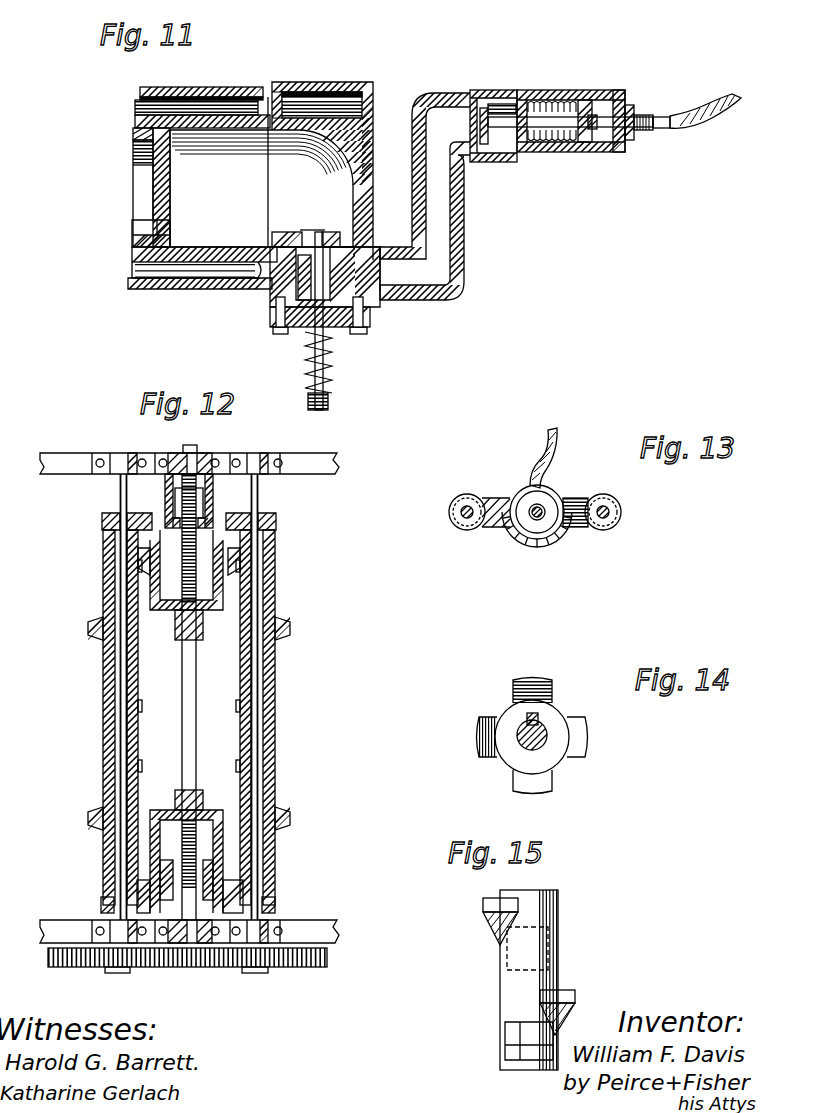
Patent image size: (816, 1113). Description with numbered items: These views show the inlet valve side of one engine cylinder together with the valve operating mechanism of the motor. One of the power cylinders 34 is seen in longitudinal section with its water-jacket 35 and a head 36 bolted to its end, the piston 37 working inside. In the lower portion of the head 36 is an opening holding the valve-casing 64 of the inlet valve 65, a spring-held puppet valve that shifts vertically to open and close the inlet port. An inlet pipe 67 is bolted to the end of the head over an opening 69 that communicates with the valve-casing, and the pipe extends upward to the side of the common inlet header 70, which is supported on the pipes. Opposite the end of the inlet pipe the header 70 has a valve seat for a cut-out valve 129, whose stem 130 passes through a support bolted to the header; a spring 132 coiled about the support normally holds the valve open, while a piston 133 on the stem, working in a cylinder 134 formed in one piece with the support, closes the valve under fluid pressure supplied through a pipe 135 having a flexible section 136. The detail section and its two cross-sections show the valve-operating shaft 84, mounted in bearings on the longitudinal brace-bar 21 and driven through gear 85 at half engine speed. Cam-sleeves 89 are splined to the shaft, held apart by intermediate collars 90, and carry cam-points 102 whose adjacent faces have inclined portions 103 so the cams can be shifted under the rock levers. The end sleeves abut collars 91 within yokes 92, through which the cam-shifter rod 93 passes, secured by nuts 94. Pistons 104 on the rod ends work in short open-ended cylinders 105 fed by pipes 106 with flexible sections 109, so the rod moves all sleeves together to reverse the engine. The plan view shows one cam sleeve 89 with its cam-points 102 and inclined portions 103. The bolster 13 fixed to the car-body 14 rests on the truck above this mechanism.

In FIG. 11, the water-jacket 35 is at (232, 80).
In FIG. 11, the cylinder head 36 is at (342, 84).
In FIG. 11, the power cylinder 34 is at (261, 188).
In FIG. 11, the piston 37 is at (172, 207).
In FIG. 11, the inlet valve 65 is at (314, 232).
In FIG. 11, the valve-casing 64 is at (345, 328).
In FIG. 11, the opening 69 is at (362, 242).
In FIG. 11, the inlet pipe 67 is at (465, 224).
In FIG. 11, the inlet header 70 is at (494, 90).
In FIG. 11, the cut-out valve 129 is at (527, 96).
In FIG. 11, the valve stem 130 is at (545, 150).
In FIG. 11, the spring 132 is at (586, 150).
In FIG. 11, the cylinder 134 is at (620, 94).
In FIG. 11, the piston 133 is at (646, 104).
In FIG. 11, the pipe 135 is at (662, 130).
In FIG. 11, the flexible section 136 is at (712, 120).
In FIG. 12, the brace-bar 21 is at (312, 456).
In FIG. 12, the gear 85 is at (158, 967).
In FIG. 12, the cylinder 105 is at (218, 495).
In FIG. 13, the cylinder 105 is at (518, 495).
In FIG. 12, the piston 104 is at (186, 868).
In FIG. 13, the piston 104 is at (542, 500).
In FIG. 12, the cam-sleeve 89 is at (103, 598).
In FIG. 14, the cam-sleeve 89 is at (552, 755).
In FIG. 15, the cam-sleeve 89 is at (558, 922).
In FIG. 12, the collar 91 is at (107, 520).
In FIG. 13, the collar 91 is at (466, 530).
In FIG. 12, the collar 90 is at (103, 660).
In FIG. 12, the cam-point 102 is at (230, 568).
In FIG. 14, the cam-point 102 is at (515, 685).
In FIG. 15, the cam-point 102 is at (490, 912).
In FIG. 12, the yoke 92 is at (218, 610).
In FIG. 13, the yoke 92 is at (565, 540).
In FIG. 12, the cam-shifter rod 93 is at (184, 693).
In FIG. 13, the cam-shifter rod 93 is at (540, 510).
In FIG. 12, the nut 94 is at (177, 615).
In FIG. 12, the valve-operating shaft 84 is at (118, 818).
In FIG. 13, the valve-operating shaft 84 is at (643, 547).
In FIG. 14, the valve-operating shaft 84 is at (540, 730).
In FIG. 12, the bolster 13 is at (103, 529).
In FIG. 12, the car-body 14 is at (240, 743).
In FIG. 13, the pipe 106 is at (537, 498).
In FIG. 13, the flexible section 109 is at (550, 440).
In FIG. 14, the inclined portion 103 is at (545, 682).
In FIG. 15, the inclined portion 103 is at (495, 940).